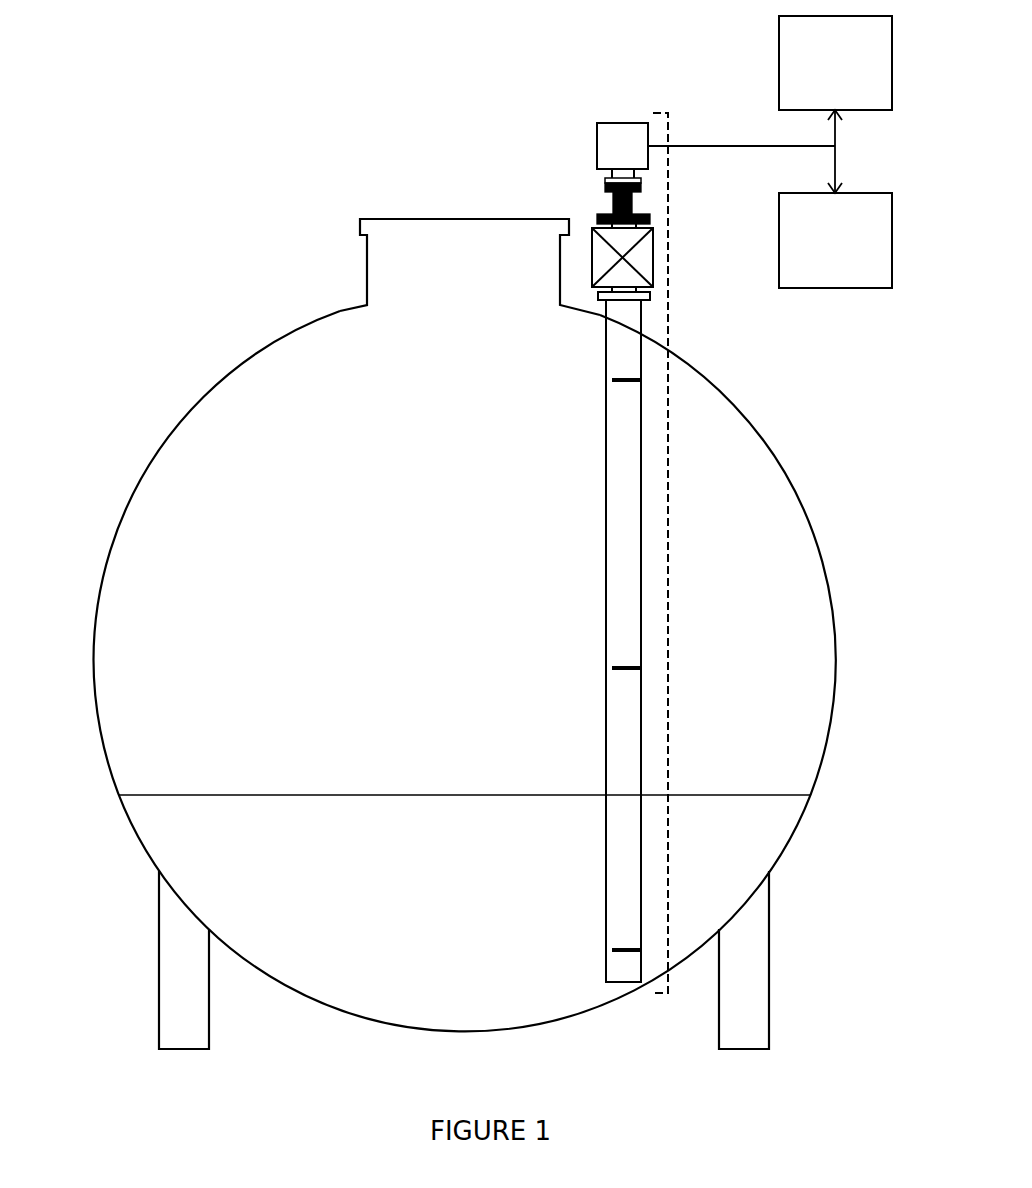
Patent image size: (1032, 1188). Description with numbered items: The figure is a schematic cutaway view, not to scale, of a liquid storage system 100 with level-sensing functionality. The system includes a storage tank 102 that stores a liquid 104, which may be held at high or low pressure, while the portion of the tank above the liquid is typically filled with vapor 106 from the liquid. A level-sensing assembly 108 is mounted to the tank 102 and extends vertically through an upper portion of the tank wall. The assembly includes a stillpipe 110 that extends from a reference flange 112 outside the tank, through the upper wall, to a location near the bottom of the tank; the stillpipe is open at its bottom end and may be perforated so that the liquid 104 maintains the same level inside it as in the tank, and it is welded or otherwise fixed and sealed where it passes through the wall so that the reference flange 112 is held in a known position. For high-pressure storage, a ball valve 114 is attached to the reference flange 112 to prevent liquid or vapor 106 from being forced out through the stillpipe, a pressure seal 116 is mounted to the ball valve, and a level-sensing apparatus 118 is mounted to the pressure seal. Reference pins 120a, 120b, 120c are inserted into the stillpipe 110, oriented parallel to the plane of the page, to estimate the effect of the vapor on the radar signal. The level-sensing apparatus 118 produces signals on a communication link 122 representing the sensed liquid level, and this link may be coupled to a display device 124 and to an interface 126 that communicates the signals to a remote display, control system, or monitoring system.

The liquid storage system 100 is at (205, 208).
The storage tank 102 is at (192, 408).
The liquid 104 is at (464, 853).
The vapor 106 is at (465, 555).
The level-sensing assembly 108 is at (668, 555).
The stillpipe 110 is at (645, 322).
The reference flange 112 is at (652, 290).
The ball valve 114 is at (655, 246).
The pressure seal 116 is at (636, 205).
The level-sensing apparatus 118 is at (620, 123).
The reference pin 120a is at (624, 378).
The reference pin 120b is at (624, 666).
The reference pin 120c is at (624, 948).
The communication link 122 is at (745, 146).
The display device 124 is at (838, 290).
The interface 126 is at (779, 60).